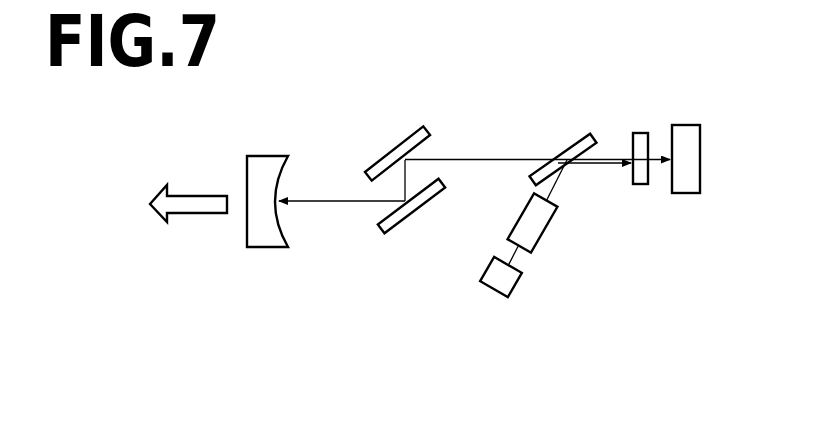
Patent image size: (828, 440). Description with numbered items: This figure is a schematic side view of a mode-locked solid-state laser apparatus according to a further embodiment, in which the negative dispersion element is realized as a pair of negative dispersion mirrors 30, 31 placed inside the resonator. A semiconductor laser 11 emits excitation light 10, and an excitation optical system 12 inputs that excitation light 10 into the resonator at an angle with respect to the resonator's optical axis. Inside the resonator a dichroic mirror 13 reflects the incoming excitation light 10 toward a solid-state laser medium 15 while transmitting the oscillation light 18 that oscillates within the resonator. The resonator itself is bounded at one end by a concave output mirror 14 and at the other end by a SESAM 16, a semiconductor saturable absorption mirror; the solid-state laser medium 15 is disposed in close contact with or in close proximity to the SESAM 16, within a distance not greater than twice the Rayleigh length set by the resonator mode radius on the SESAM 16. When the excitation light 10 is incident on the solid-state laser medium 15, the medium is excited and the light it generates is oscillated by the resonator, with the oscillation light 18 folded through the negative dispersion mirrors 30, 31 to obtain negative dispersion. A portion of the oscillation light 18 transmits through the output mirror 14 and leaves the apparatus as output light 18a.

The excitation light 10 is at (596, 168).
The semiconductor laser 11 is at (519, 295).
The excitation optical system 12 is at (544, 238).
The dichroic mirror 13 is at (563, 148).
The concave output mirror 14 is at (263, 155).
The solid-state laser medium 15 is at (634, 132).
The SESAM 16 is at (686, 124).
The oscillation light 18 is at (322, 203).
The output light 18a is at (193, 195).
The negative dispersion mirror 30 is at (400, 145).
The negative dispersion mirror 31 is at (406, 213).